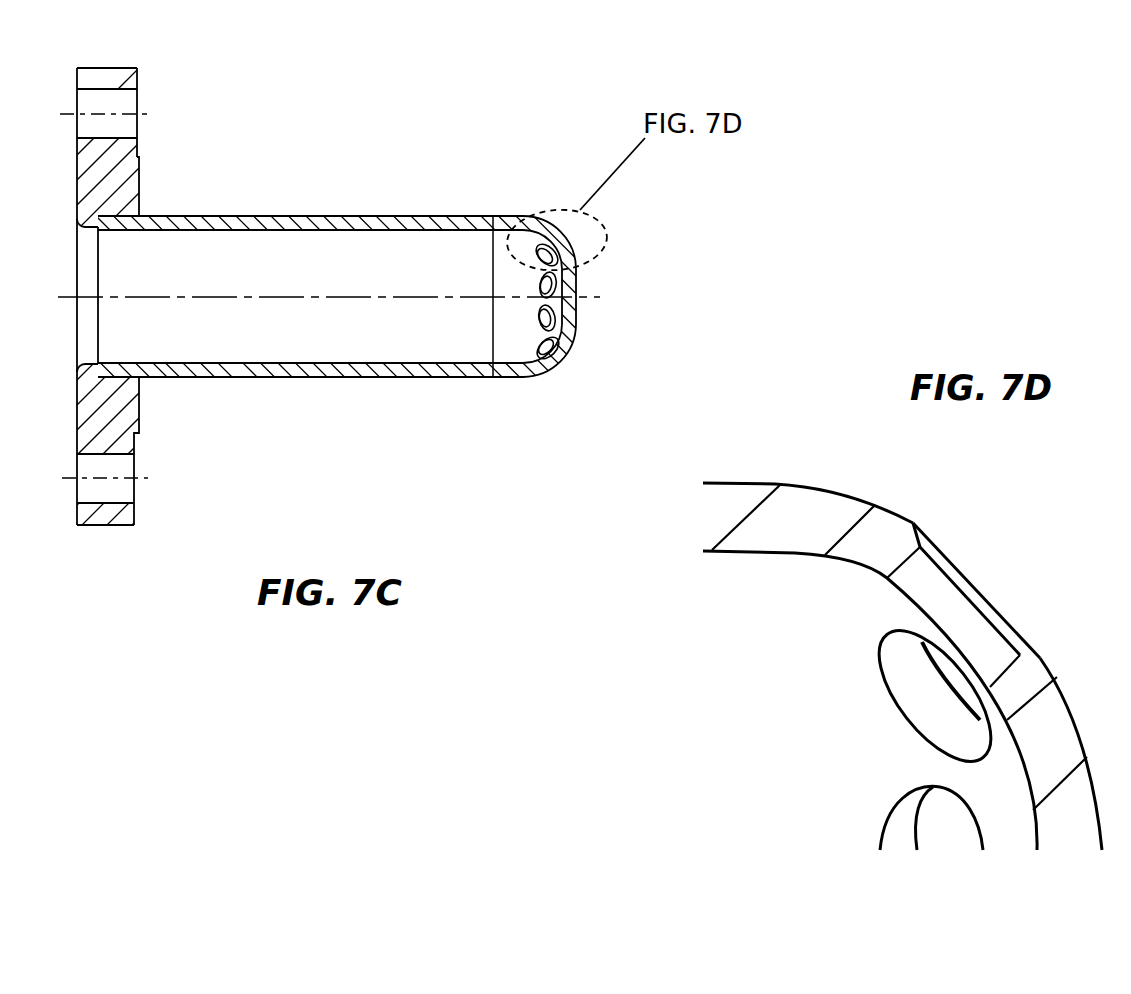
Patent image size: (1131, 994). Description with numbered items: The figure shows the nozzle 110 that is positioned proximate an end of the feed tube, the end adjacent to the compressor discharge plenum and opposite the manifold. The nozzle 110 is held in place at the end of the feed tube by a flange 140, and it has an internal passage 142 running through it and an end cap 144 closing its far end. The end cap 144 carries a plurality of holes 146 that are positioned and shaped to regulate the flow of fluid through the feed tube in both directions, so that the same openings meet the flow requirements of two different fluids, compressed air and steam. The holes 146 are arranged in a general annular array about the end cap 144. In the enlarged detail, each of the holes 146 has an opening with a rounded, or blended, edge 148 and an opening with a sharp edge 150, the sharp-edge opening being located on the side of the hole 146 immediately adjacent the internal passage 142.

In FIG. 7C, the nozzle 110 is at (322, 176).
In FIG. 7C, the flange 140 is at (128, 83).
In FIG. 7C, the internal passage 142 is at (338, 360).
In FIG. 7C, the end cap 144 is at (518, 383).
In FIG. 7C, the holes 146 is at (560, 243).
In FIG. 7D, the rounded edge 148 is at (937, 552).
In FIG. 7D, the sharp edge 150 is at (898, 595).